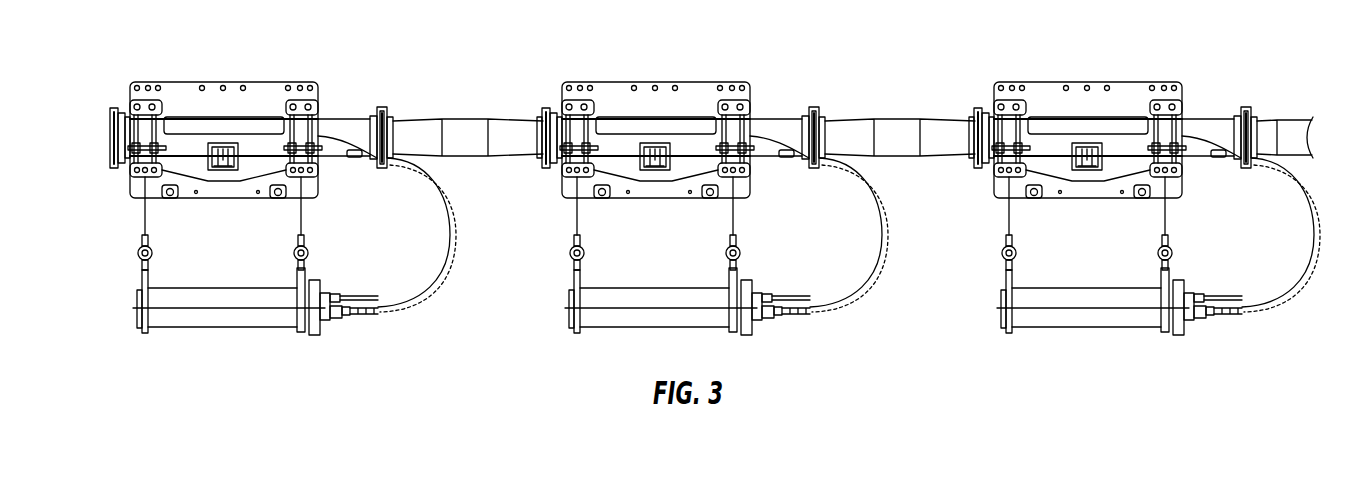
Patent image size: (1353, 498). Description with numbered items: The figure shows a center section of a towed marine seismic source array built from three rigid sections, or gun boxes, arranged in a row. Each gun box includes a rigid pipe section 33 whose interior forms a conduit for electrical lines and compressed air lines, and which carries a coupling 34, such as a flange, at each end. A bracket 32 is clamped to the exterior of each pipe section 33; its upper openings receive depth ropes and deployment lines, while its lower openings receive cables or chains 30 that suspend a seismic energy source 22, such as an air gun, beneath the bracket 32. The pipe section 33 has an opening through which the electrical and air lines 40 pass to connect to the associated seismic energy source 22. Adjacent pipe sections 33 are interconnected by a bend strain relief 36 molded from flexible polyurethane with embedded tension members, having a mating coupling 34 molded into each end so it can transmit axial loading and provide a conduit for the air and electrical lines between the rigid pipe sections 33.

The seismic energy source 22 is at (137, 318).
The cables or chains 30 is at (145, 218).
The bracket 32 is at (318, 86).
The rigid pipe section 33 is at (318, 151).
The coupling 34 is at (110, 123).
The bend strain relief 36 is at (420, 119).
The opening for the electrical and air lines 40 is at (458, 222).